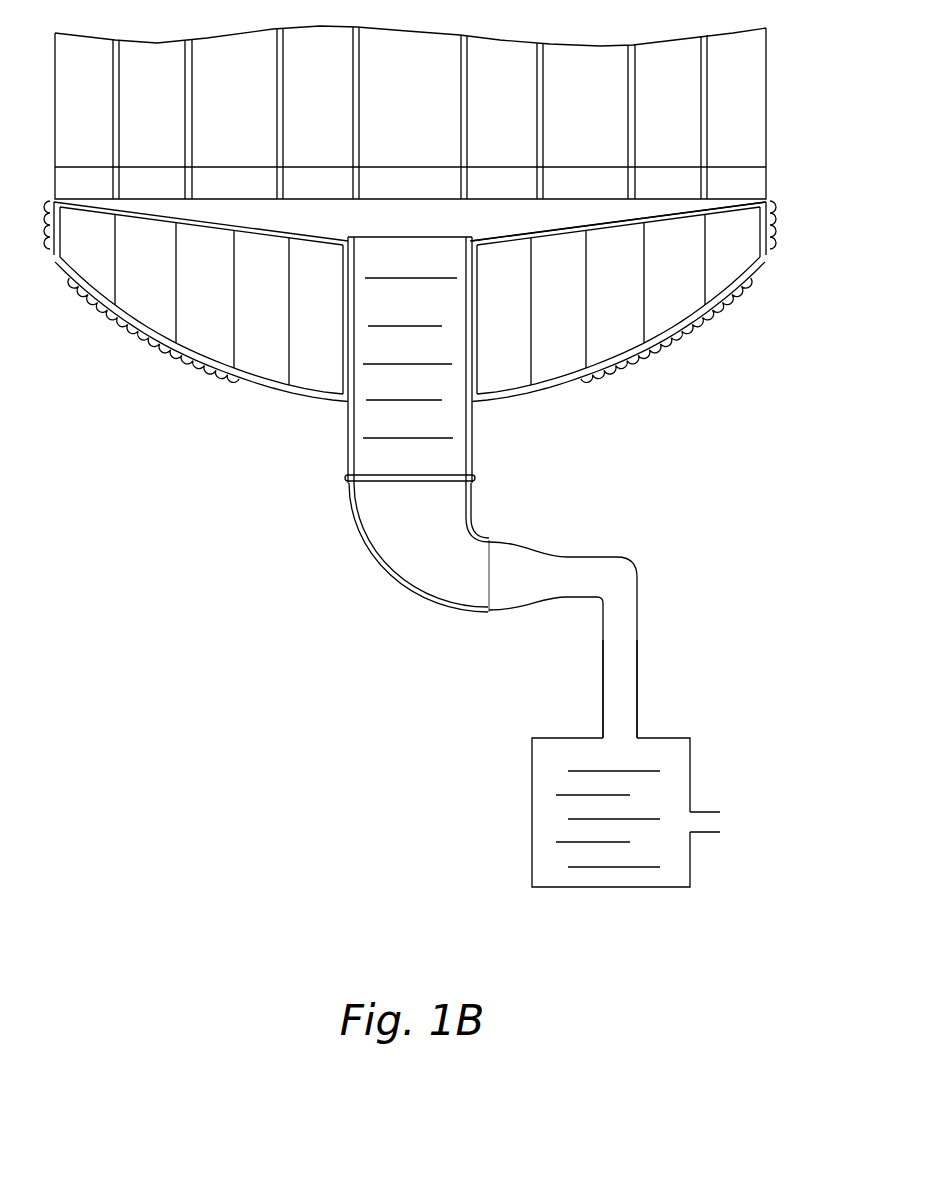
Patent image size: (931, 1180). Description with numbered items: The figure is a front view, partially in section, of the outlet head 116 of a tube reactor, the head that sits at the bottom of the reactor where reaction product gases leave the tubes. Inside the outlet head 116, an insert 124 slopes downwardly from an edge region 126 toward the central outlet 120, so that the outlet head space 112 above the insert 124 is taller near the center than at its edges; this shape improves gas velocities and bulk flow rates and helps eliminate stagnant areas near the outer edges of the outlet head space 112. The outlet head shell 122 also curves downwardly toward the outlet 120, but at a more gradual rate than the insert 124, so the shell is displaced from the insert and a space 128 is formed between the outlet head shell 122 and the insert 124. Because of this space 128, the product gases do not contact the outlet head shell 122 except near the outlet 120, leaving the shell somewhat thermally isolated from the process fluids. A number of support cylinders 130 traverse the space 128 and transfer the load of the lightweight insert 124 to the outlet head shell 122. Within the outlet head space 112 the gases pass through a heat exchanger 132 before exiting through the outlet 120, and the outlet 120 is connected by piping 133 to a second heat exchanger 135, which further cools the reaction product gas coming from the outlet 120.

The outlet head space 112 is at (410, 131).
The outlet head 116 is at (243, 418).
The outlet 120 is at (493, 610).
The outlet head shell 122 is at (63, 272).
The insert 124 is at (254, 232).
The edge region 126 is at (705, 204).
The space 128 is at (413, 259).
The support cylinders 130 is at (115, 262).
The heat exchanger 132 is at (410, 360).
The piping 133 is at (617, 647).
The second heat exchanger 135 is at (547, 831).